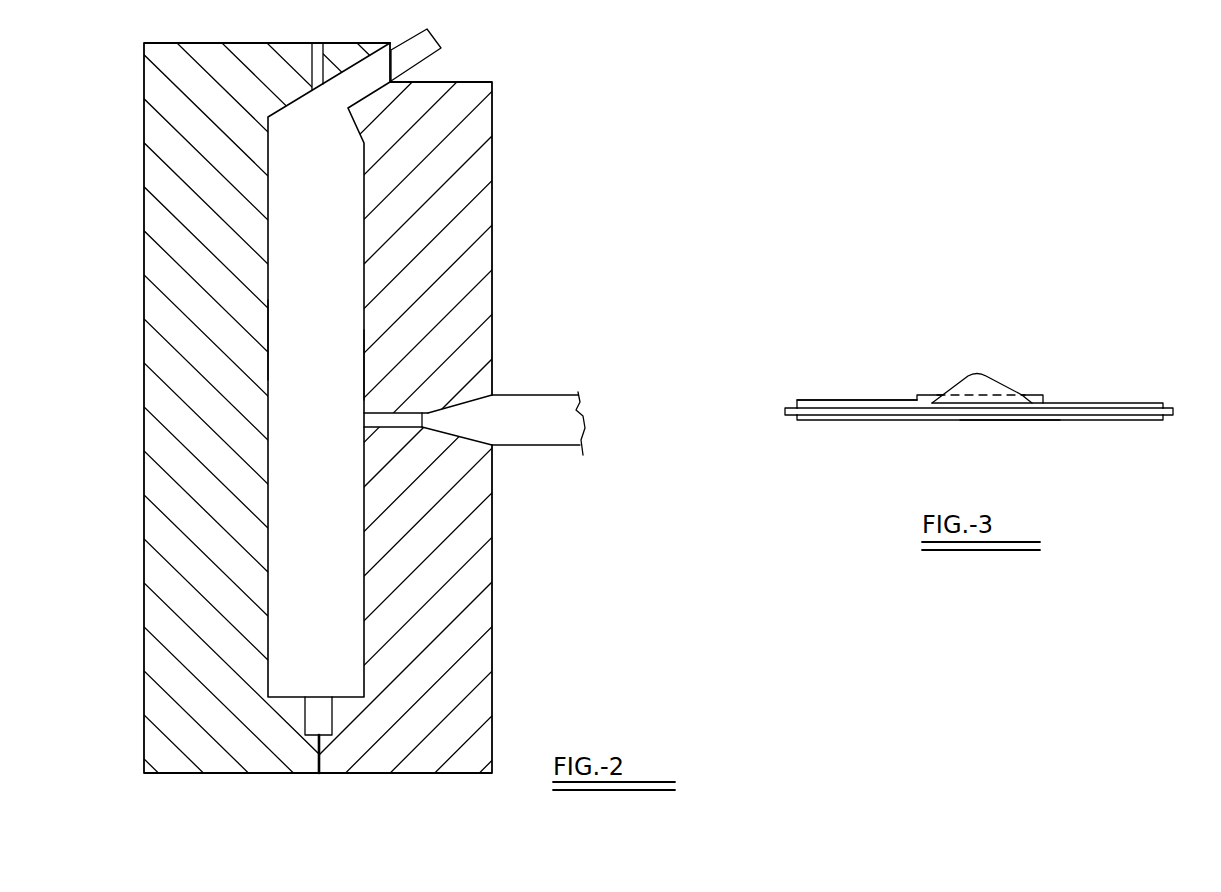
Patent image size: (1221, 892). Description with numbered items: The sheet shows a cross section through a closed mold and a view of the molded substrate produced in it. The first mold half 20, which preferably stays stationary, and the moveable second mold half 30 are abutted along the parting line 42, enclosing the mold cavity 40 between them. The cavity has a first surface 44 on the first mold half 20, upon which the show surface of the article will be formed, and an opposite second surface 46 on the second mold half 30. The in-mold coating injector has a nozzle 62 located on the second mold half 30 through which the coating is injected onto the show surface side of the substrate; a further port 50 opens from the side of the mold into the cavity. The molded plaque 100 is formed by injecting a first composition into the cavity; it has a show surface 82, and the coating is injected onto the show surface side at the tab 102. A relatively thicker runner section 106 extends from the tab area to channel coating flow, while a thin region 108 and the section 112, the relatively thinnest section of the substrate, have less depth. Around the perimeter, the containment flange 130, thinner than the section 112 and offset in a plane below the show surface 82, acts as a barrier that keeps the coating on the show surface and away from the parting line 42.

In FIG. 2, the first mold half 20 is at (500, 288).
In FIG. 2, the second mold half 30 is at (138, 270).
In FIG. 2, the mold cavity 40 is at (282, 510).
In FIG. 2, the parting line 42 is at (316, 760).
In FIG. 2, the first surface 44 is at (276, 334).
In FIG. 2, the second surface 46 is at (356, 369).
In FIG. 2, the fill tube 50 is at (547, 385).
In FIG. 2, the nozzle 62 is at (315, 52).
In FIG. 2, the tab 102 is at (414, 38).
In FIG. 3, the tab 102 is at (1000, 380).
In FIG. 2, the containment flange 130 is at (332, 722).
In FIG. 3, the containment flange 130 is at (786, 410).
In FIG. 3, the plaque 100 is at (851, 434).
In FIG. 3, the runner section 106 is at (929, 396).
In FIG. 3, the first layer 108 is at (843, 400).
In FIG. 3, the section 112 is at (1133, 403).
In FIG. 3, the show surface 82 is at (1007, 420).